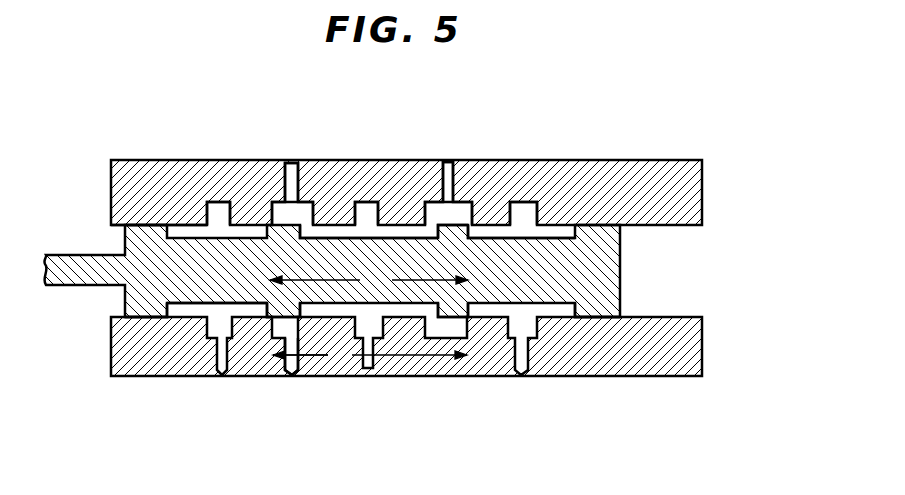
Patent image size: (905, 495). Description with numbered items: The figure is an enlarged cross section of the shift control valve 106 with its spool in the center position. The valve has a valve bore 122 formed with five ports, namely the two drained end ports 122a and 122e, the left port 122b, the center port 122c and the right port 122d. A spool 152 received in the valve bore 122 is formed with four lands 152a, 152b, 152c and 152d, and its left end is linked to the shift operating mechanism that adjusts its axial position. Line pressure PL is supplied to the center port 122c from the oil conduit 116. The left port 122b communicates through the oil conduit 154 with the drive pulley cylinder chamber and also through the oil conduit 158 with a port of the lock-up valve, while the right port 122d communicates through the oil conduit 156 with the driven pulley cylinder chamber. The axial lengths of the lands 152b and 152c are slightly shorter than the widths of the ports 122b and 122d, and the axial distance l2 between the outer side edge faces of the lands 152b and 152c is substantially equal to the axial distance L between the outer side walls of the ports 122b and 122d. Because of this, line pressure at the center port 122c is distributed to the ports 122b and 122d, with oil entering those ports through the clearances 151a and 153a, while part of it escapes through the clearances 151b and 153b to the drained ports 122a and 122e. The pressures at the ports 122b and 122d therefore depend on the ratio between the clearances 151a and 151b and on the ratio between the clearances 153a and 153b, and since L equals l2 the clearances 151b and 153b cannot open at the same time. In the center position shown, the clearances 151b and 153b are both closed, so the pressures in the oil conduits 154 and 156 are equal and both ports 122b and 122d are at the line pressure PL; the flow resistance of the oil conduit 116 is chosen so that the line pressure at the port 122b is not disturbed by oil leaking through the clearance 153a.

The shift control valve 106 is at (545, 150).
The oil conduit 116 is at (374, 368).
The valve bore 122 is at (186, 224).
The end port 122a is at (226, 212).
The left port 122b is at (284, 208).
The center port 122c is at (393, 212).
The right port 122d is at (443, 186).
The end port 122e is at (526, 212).
The oil conduit 154 is at (299, 176).
The oil conduit 156 is at (455, 170).
The clearance 151a is at (309, 230).
The clearance 151b is at (270, 226).
The clearance 153a is at (436, 226).
The clearance 153b is at (482, 227).
The spool 152 is at (193, 292).
The land 152a is at (133, 288).
The land 152b is at (272, 316).
The land 152c is at (462, 312).
The land 152d is at (592, 300).
The oil conduit 158 is at (297, 360).
The line pressure PL is at (370, 379).
The axial distance between outer side walls of the ports L is at (309, 358).
The axial distance between outer side edge faces of the lands l2 is at (369, 280).